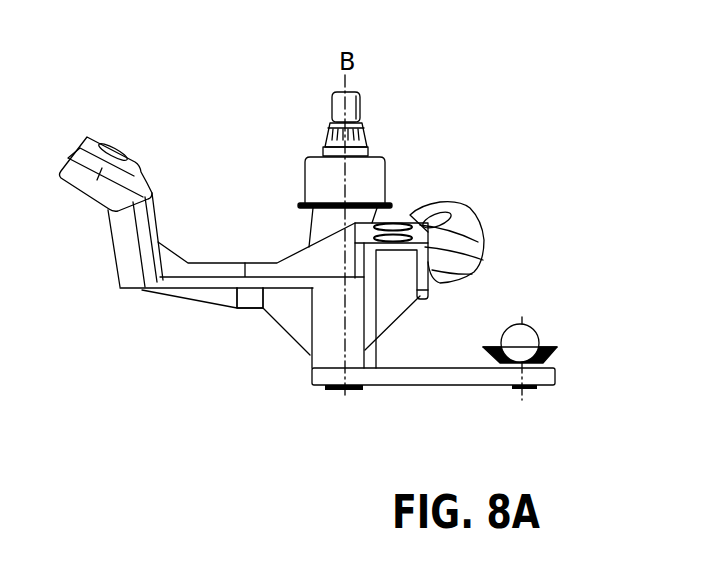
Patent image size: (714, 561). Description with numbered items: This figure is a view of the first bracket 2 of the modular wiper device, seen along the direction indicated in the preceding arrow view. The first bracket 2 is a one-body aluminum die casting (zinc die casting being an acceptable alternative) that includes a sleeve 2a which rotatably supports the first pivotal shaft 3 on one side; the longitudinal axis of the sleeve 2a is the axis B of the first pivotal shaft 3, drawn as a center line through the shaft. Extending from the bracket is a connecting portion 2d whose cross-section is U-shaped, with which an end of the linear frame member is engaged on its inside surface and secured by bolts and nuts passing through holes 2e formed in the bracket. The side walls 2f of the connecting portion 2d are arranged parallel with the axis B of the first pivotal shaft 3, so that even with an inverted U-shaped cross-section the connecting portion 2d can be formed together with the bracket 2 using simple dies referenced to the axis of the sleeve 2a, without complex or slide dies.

The first bracket 2 is at (288, 287).
The sleeve 2a is at (329, 355).
The connecting portion 2d is at (433, 265).
The holes 2e is at (407, 222).
The side walls 2f is at (430, 294).
The first pivotal shaft 3 is at (362, 105).